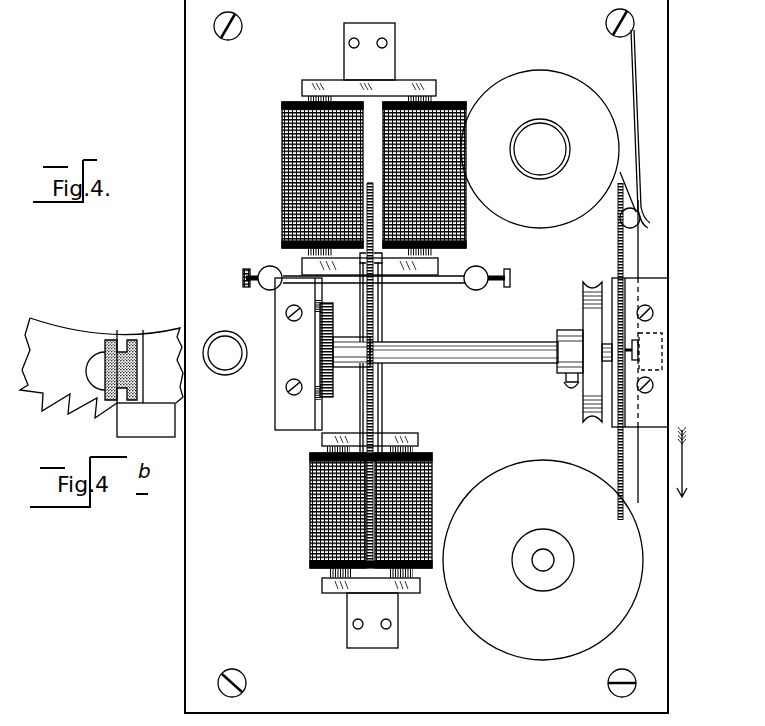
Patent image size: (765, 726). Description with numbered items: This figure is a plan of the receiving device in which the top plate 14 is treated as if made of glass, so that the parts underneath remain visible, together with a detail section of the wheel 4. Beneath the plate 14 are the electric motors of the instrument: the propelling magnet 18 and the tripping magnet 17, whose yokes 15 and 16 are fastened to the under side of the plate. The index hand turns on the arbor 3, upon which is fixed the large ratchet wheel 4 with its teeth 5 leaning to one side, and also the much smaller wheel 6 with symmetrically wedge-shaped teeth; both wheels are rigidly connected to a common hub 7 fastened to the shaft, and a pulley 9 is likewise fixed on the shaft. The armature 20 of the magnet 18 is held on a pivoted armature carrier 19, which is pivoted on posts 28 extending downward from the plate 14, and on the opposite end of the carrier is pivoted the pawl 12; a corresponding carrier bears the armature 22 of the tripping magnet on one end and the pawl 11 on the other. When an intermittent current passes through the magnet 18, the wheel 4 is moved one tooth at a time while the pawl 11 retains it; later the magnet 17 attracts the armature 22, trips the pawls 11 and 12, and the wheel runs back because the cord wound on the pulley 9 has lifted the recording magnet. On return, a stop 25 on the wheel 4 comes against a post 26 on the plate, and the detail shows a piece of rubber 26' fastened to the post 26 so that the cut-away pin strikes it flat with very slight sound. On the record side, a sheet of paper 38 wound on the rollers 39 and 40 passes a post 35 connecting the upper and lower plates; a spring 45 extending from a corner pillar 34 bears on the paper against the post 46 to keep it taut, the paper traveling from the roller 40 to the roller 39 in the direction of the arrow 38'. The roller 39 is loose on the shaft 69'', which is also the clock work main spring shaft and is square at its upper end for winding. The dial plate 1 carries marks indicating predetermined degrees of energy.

In FIG. 4, the dial plate 1 is at (618, 452).
In FIG. 4, the arbor 3 is at (483, 346).
In FIG. 4, the ratchet wheel 4 is at (377, 371).
In FIG. 4B, the ratchet wheel 4 is at (101, 368).
In FIG. 4, the teeth 5 is at (371, 205).
In FIG. 4, the ratchet wheel 6 is at (334, 349).
In FIG. 4, the hub 7 is at (351, 368).
In FIG. 4, the pulley 9 is at (583, 310).
In FIG. 4, the pawl 11 is at (379, 390).
In FIG. 4, the pawl 12 is at (379, 318).
In FIG. 4, the plate 14 is at (245, 76).
In FIG. 4, the yoke 15 is at (406, 85).
In FIG. 4, the yoke 16 is at (400, 593).
In FIG. 4, the tripping magnet 17 is at (322, 503).
In FIG. 4, the propelling magnet 18 is at (282, 139).
In FIG. 4, the pivoted armature carrier 19 is at (388, 287).
In FIG. 4, the armature 20 is at (448, 261).
In FIG. 4, the armature 22 is at (398, 441).
In FIG. 4B, the stop 25 is at (97, 353).
In FIG. 4B, the post 26 is at (146, 383).
In FIG. 4B, the piece of rubber 26' is at (133, 350).
In FIG. 4, the posts 28 is at (272, 266).
In FIG. 4, the corner pillars 34 is at (606, 22).
In FIG. 4, the post 35 is at (658, 333).
In FIG. 4, the sheet of paper 38 is at (642, 351).
In FIG. 4, the arrow 38' is at (701, 462).
In FIG. 4, the roller 39 is at (543, 560).
In FIG. 4, the roller 40 is at (540, 149).
In FIG. 4, the spring 45 is at (642, 183).
In FIG. 4, the post 46 is at (640, 230).
In FIG. 4, the shaft 69'' is at (580, 566).